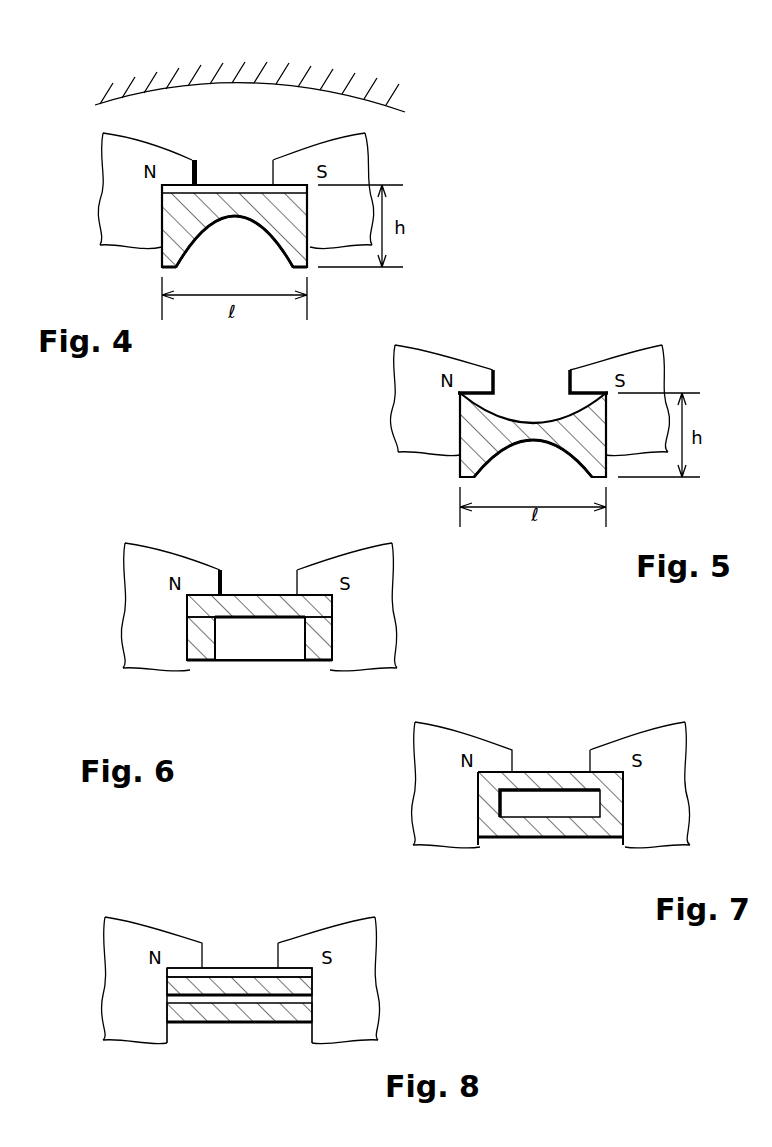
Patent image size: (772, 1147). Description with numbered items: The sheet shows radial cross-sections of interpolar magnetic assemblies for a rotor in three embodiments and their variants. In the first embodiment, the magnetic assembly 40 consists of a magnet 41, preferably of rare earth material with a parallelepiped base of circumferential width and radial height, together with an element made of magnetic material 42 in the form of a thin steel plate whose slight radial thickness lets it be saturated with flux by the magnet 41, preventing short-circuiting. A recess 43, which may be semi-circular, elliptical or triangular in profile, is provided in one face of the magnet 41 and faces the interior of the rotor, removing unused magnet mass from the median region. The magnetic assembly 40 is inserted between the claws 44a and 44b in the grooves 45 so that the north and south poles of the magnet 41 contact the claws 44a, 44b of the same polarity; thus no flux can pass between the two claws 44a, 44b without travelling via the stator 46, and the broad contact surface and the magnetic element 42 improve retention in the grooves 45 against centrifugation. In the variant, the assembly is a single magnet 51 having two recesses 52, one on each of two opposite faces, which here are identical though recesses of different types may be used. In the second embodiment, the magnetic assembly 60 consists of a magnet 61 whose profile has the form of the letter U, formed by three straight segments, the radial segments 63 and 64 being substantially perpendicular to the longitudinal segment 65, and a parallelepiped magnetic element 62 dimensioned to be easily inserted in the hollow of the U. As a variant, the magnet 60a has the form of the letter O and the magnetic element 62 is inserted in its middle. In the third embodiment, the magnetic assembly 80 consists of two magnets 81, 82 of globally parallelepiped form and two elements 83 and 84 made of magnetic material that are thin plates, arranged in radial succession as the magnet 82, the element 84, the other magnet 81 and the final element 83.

In FIG. 4, the magnetic assembly 40 is at (234, 212).
In FIG. 4, the magnet 41 is at (228, 222).
In FIG. 4, the element made of magnetic material 42 is at (218, 184).
In FIG. 4, the recess 43 is at (208, 252).
In FIG. 4, the claw 44a is at (115, 212).
In FIG. 4, the claw 44b is at (340, 152).
In FIG. 4, the groove 45 is at (172, 176).
In FIG. 4, the stator 46 is at (318, 88).
In FIG. 5, the magnet 51 is at (528, 433).
In FIG. 5, the recess 52 is at (519, 392).
In FIG. 6, the magnetic assembly 60 is at (256, 618).
In FIG. 7, the magnet 60a is at (550, 845).
In FIG. 6, the magnet 61 is at (281, 624).
In FIG. 6, the magnetic element 62 is at (247, 642).
In FIG. 7, the magnetic element 62 is at (520, 800).
In FIG. 6, the radial segment 63 is at (200, 650).
In FIG. 6, the radial segment 64 is at (315, 650).
In FIG. 6, the longitudinal segment 65 is at (240, 606).
In FIG. 8, the magnetic assembly 80 is at (234, 972).
In FIG. 8, the magnet 81 is at (280, 985).
In FIG. 8, the magnet 82 is at (243, 1012).
In FIG. 8, the element made of magnetic material 83 is at (222, 972).
In FIG. 8, the element made of magnetic material 84 is at (197, 1022).